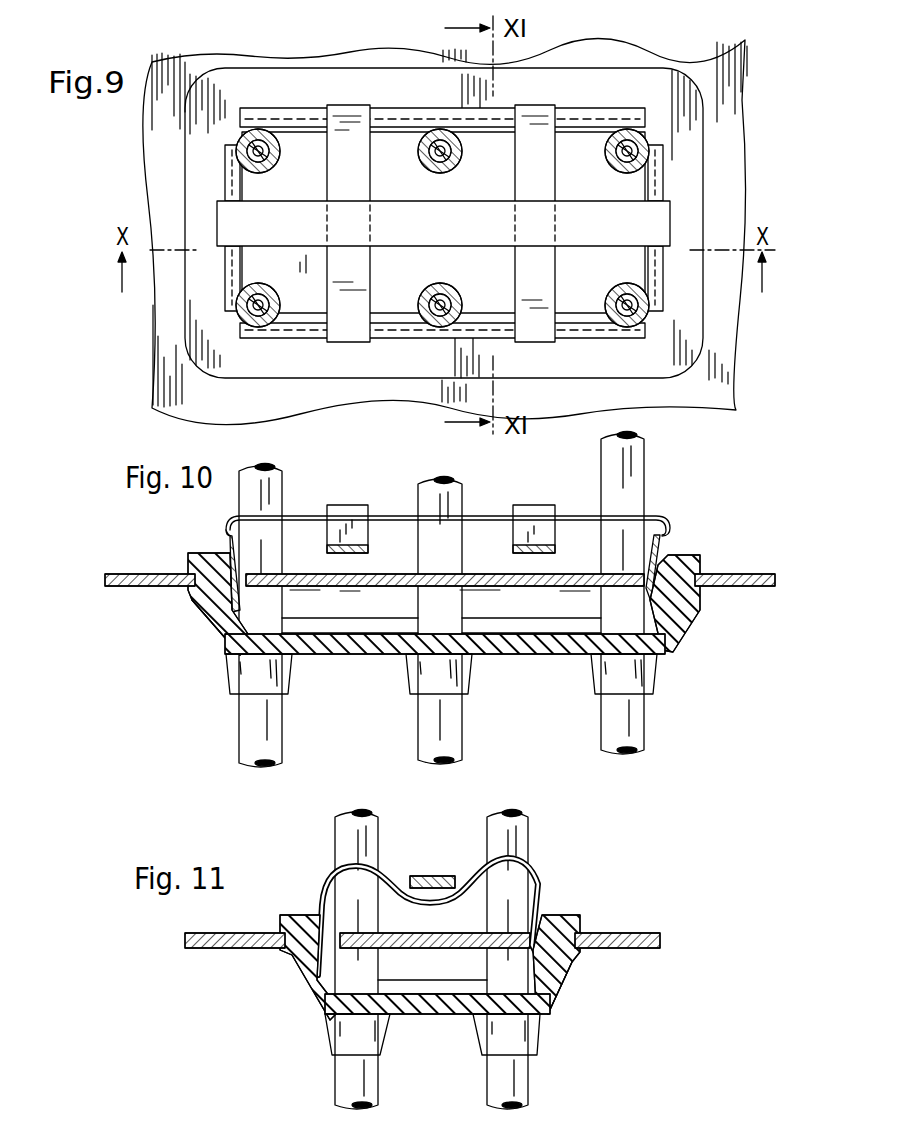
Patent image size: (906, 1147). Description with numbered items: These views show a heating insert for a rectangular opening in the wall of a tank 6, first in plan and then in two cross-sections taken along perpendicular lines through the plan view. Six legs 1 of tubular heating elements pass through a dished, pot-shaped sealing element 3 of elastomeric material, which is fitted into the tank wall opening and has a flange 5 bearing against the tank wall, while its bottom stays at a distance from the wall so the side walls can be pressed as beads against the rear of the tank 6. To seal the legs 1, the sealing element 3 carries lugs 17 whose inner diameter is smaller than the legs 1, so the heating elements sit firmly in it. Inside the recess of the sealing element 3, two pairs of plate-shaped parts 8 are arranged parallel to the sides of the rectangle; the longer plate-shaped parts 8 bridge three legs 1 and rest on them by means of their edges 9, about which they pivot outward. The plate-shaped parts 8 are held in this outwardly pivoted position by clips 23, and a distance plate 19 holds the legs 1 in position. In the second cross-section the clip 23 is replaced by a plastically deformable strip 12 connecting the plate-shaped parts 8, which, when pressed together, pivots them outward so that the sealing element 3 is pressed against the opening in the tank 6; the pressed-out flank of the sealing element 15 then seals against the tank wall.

In FIG. 9, the legs 1 is at (281, 160).
In FIG. 10, the legs 1 is at (272, 484).
In FIG. 11, the legs 1 is at (340, 836).
In FIG. 10, the sealing element 3 is at (664, 644).
In FIG. 9, the flange 5 is at (688, 110).
In FIG. 10, the flange 5 is at (697, 556).
In FIG. 11, the flange 5 is at (300, 914).
In FIG. 9, the tank 6 is at (718, 410).
In FIG. 10, the tank 6 is at (751, 574).
In FIG. 11, the tank 6 is at (661, 934).
In FIG. 9, the plate-shaped parts 8 is at (395, 122).
In FIG. 10, the plate-shaped parts 8 is at (228, 545).
In FIG. 10, the edges 9 is at (244, 598).
In FIG. 11, the strip 12 is at (540, 876).
In FIG. 10, the flange 15 is at (196, 605).
In FIG. 11, the flange 15 is at (568, 962).
In FIG. 10, the lugs 17 is at (292, 688).
In FIG. 11, the lugs 17 is at (382, 1040).
In FIG. 9, the distance plate 19 is at (600, 287).
In FIG. 10, the distance plate 19 is at (383, 577).
In FIG. 11, the distance plate 19 is at (437, 934).
In FIG. 9, the clips 23 is at (460, 236).
In FIG. 10, the clips 23 is at (352, 530).
In FIG. 11, the clips 23 is at (425, 876).